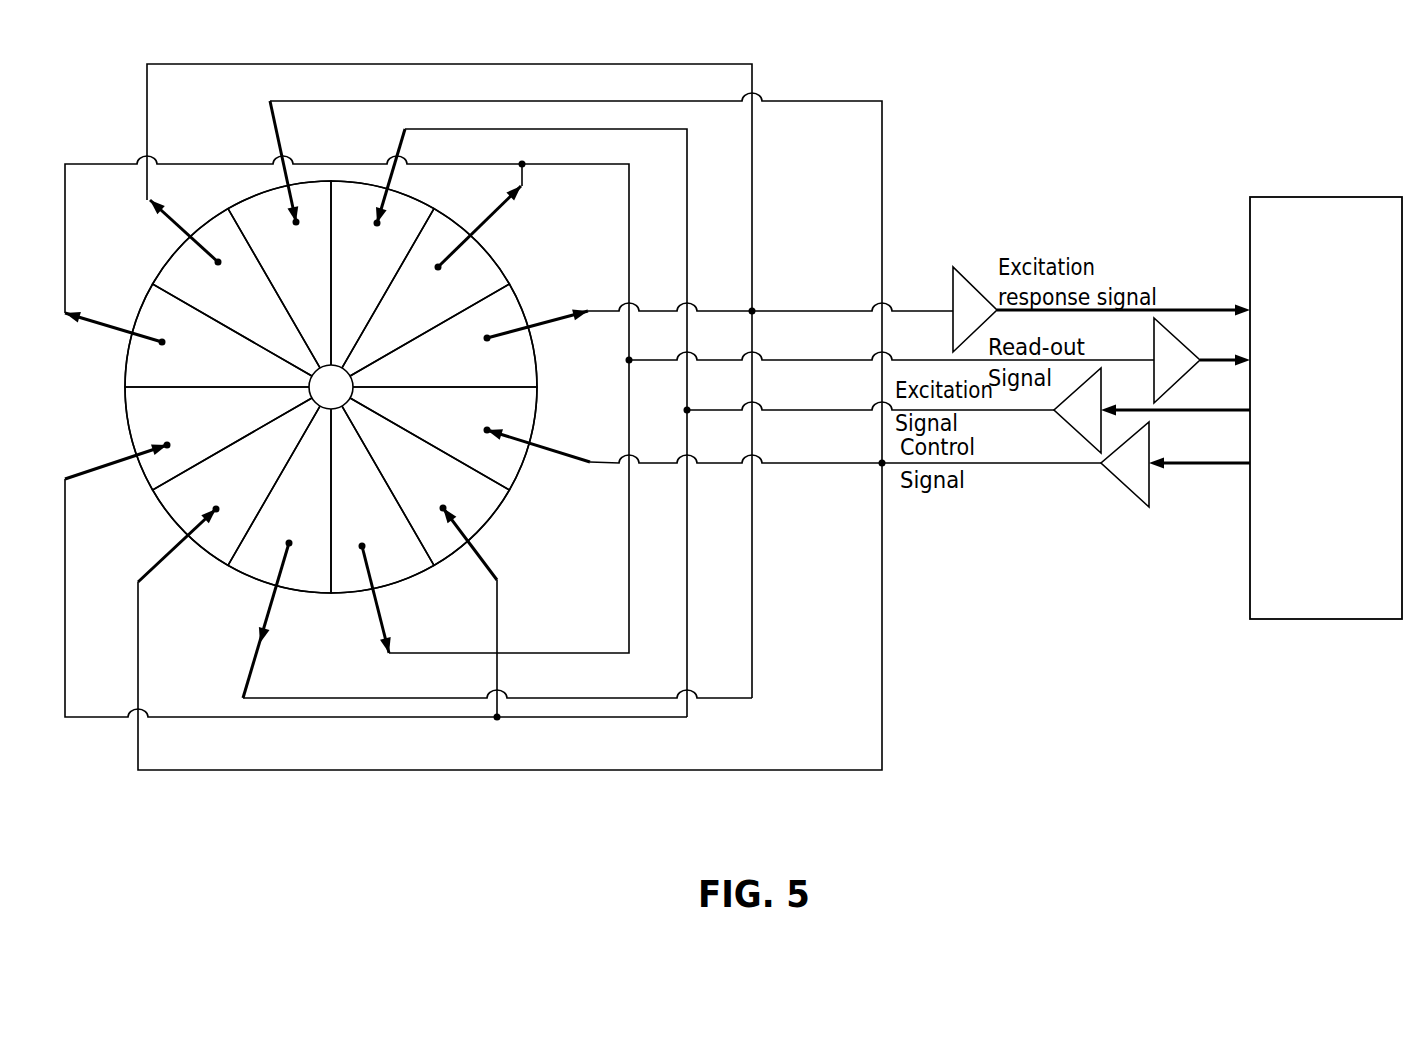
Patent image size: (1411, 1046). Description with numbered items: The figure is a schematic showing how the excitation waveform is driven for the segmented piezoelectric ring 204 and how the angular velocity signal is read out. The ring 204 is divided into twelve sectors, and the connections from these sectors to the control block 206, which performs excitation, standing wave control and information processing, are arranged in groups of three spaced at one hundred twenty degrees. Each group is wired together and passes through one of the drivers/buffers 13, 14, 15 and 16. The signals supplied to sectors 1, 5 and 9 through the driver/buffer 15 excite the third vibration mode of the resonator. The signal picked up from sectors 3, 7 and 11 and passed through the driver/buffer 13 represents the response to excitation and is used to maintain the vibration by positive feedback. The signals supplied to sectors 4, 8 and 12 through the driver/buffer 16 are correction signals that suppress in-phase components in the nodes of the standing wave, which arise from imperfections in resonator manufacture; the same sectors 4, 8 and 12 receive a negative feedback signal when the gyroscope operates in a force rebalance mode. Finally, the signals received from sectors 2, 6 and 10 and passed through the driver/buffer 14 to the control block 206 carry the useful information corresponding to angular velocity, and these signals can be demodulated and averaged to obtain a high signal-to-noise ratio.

The sector 1 is at (382, 248).
The sector 2 is at (431, 281).
The sector 3 is at (469, 335).
The sector 4 is at (470, 438).
The sector 5 is at (425, 489).
The sector 6 is at (382, 529).
The sector 7 is at (279, 552).
The sector 8 is at (229, 490).
The sector 9 is at (188, 438).
The sector 10 is at (188, 335).
The sector 11 is at (235, 288).
The sector 12 is at (279, 234).
The driver/buffer 13 is at (975, 309).
The driver/buffer 14 is at (1177, 360).
The driver/buffer 15 is at (1077, 410).
The driver/buffer 16 is at (1125, 464).
The piezoelectric ring 204 is at (523, 305).
The control block 206 is at (1310, 197).